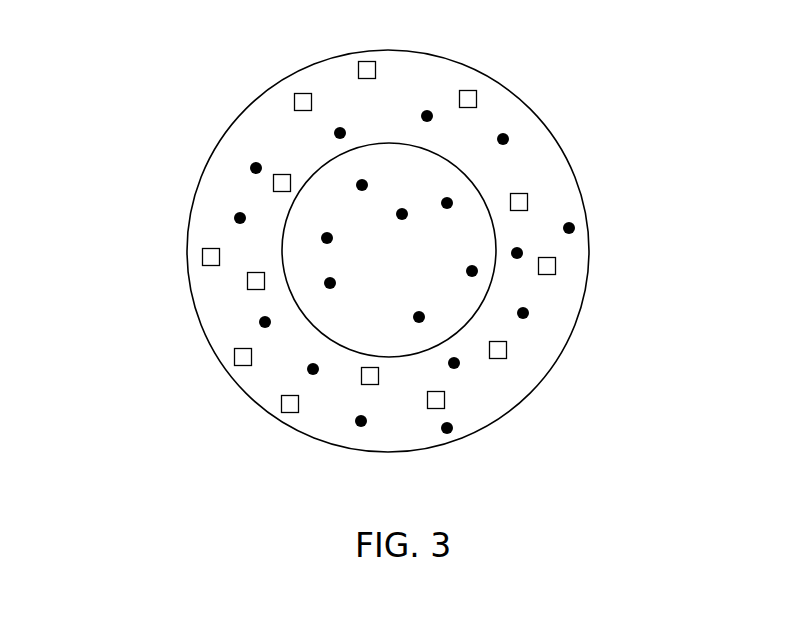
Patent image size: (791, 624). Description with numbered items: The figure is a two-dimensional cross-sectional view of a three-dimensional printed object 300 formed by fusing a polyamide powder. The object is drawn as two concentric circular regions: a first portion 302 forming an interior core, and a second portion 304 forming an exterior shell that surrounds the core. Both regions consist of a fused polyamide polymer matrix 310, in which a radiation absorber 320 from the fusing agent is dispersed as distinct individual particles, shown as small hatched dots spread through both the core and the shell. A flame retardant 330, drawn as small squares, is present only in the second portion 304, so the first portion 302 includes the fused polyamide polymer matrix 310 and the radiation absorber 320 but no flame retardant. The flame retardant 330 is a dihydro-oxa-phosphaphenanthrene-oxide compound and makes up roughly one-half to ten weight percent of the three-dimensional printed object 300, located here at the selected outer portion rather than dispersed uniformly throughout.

The three-dimensional printed object 300 is at (158, 38).
The first portion 302 is at (405, 260).
The second portion 304 is at (584, 306).
The fused polyamide polymer matrix 310 is at (523, 165).
The radiation absorber 320 is at (575, 228).
The flame retardant 330 is at (477, 98).